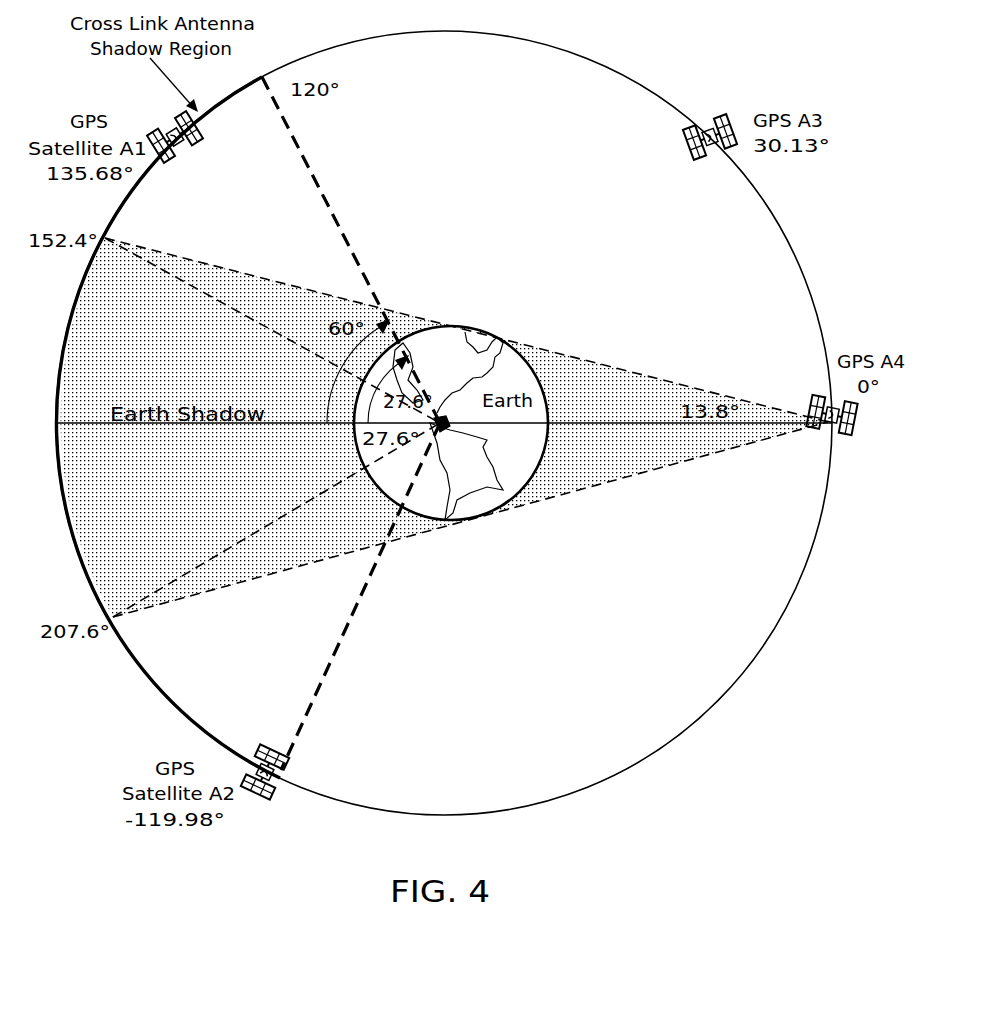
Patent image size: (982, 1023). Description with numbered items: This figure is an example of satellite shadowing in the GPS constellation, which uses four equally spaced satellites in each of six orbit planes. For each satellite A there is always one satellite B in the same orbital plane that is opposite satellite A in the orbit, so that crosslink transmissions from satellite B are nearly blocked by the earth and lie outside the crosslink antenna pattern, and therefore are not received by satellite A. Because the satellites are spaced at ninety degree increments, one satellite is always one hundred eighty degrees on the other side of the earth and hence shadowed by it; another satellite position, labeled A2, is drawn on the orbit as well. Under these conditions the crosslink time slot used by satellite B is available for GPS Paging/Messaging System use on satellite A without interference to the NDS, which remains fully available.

The satellite A is at (844, 419).
The satellite B is at (175, 133).
The GPS satellite A2 position A2 is at (276, 788).